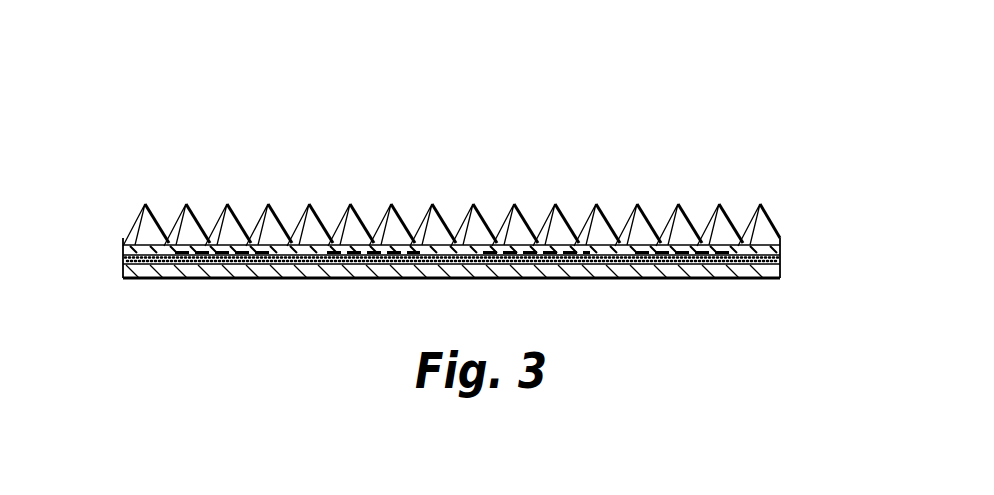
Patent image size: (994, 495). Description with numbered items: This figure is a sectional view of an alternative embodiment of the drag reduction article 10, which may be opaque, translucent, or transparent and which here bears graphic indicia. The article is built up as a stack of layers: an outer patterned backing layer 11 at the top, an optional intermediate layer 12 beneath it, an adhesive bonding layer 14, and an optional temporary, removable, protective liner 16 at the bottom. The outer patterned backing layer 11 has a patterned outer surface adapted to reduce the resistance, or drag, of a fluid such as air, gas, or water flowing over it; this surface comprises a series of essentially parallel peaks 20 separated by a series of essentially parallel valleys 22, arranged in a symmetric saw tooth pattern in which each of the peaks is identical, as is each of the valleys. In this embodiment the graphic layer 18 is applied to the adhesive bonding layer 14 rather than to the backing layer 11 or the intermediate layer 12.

The drag reduction article 10 is at (770, 130).
The outer patterned backing layer 11 is at (757, 249).
The intermediate layer 12 is at (782, 253).
The adhesive bonding layer 14 is at (122, 261).
The protective liner 16 is at (515, 272).
The graphic layer 18 is at (253, 250).
The peaks 20 is at (596, 205).
The valleys 22 is at (740, 240).